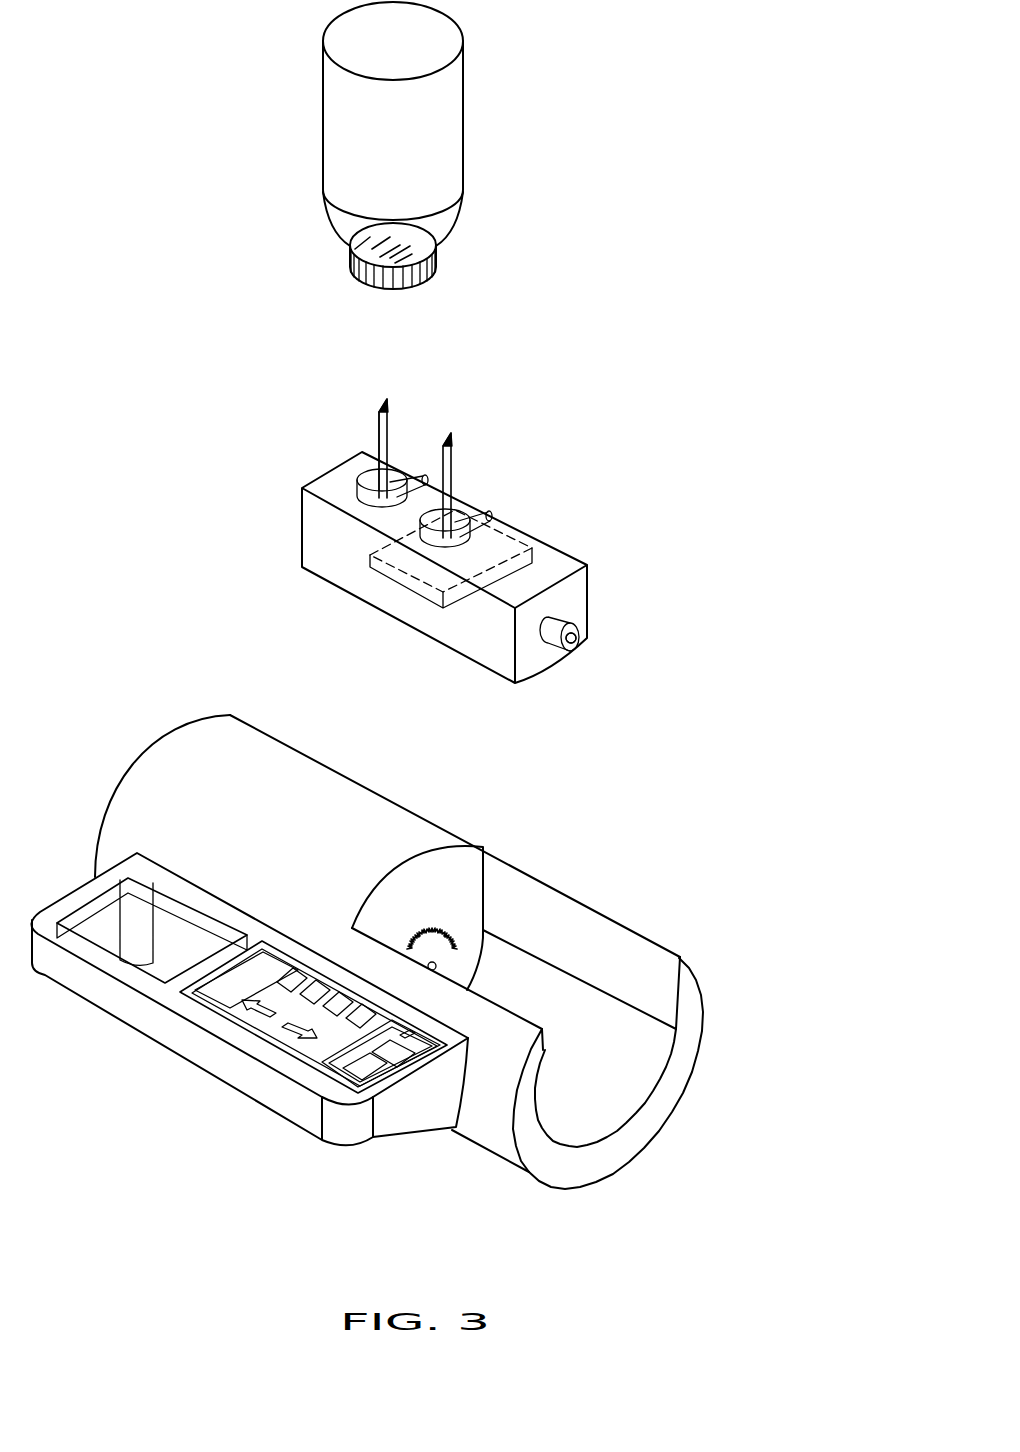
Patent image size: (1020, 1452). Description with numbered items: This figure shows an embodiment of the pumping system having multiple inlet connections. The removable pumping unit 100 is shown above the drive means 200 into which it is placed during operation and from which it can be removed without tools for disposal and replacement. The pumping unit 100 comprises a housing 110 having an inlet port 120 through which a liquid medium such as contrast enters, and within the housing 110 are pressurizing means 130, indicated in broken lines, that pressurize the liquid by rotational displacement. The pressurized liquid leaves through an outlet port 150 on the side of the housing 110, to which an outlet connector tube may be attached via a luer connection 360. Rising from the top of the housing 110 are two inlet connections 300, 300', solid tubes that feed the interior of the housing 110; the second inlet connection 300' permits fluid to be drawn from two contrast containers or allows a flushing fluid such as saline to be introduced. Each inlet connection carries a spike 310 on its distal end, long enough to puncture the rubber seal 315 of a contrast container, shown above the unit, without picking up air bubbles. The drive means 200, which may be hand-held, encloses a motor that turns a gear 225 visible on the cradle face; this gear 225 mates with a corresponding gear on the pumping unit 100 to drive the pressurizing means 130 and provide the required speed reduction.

The removable pumping unit 100 is at (483, 540).
The housing 110 is at (535, 532).
The inlet port 120 is at (377, 505).
The pressurizing means 130 is at (412, 590).
The outlet port 150 is at (497, 672).
The luer connection 360 is at (583, 633).
The inlet connection 300 is at (450, 427).
The second inlet connection 300' is at (500, 488).
The spike 310 is at (390, 410).
The rubber seal 315 is at (437, 258).
The drive means 200 is at (367, 952).
The gear 225 is at (450, 933).